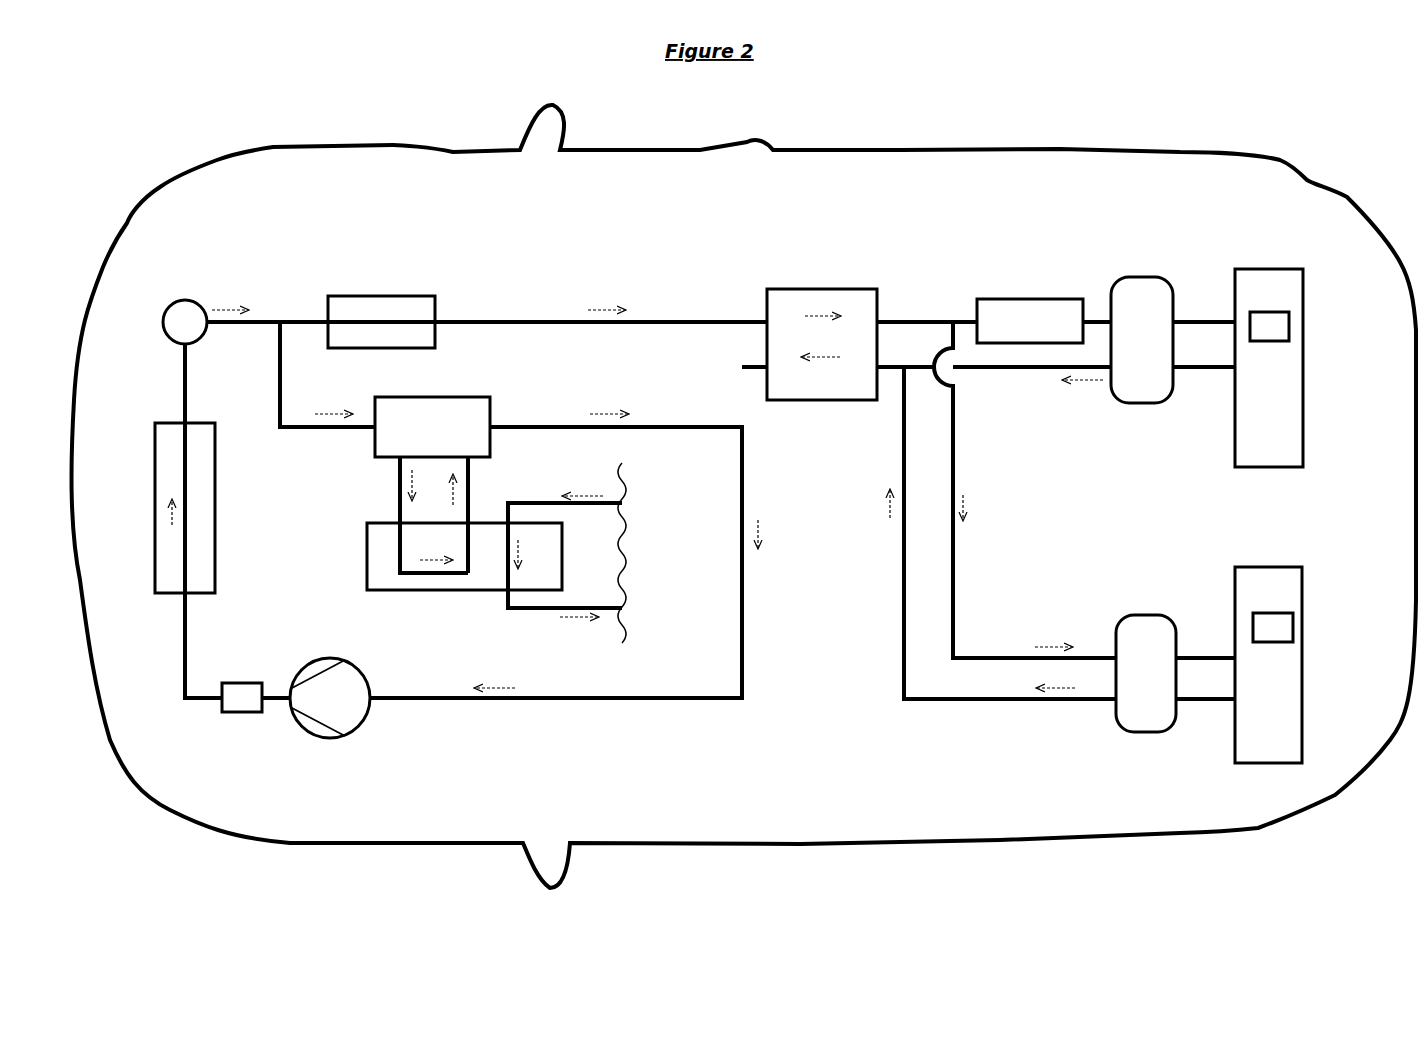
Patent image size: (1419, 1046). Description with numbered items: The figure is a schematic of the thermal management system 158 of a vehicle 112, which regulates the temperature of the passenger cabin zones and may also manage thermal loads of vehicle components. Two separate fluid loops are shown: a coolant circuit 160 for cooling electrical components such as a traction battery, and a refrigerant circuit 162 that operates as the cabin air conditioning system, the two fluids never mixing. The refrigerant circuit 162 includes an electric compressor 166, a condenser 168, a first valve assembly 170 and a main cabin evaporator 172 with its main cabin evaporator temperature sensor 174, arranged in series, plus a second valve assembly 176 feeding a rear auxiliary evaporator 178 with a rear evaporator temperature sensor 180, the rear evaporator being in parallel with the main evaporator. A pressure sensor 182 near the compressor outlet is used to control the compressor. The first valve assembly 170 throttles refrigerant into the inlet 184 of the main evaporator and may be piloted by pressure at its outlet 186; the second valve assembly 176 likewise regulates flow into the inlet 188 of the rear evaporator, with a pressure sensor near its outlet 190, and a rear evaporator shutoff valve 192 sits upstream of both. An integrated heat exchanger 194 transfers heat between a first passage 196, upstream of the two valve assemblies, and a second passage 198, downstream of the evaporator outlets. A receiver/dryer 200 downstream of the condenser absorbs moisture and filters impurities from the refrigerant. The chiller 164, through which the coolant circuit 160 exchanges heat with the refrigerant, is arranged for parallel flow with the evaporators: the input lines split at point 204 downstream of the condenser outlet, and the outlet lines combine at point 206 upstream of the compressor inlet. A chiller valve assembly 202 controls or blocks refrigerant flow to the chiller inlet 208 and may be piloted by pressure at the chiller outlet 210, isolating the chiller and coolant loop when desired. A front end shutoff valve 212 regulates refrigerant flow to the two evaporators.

The vehicle 112 is at (1205, 150).
The thermal management system 158 is at (625, 224).
The coolant circuit 160 is at (512, 622).
The refrigerant circuit 162 is at (583, 740).
The chiller 164 is at (367, 557).
The electric compressor 166 is at (310, 666).
The condenser 168 is at (155, 510).
The first valve assembly 170 is at (1145, 733).
The main cabin evaporator 172 is at (1268, 765).
The main cabin evaporator temperature sensor 174 is at (1273, 628).
The second valve assembly 176 is at (1140, 278).
The rear auxiliary evaporator 178 is at (1270, 268).
The rear evaporator temperature sensor 180 is at (1268, 326).
The pressure sensor 182 is at (240, 713).
The inlet of main cabin evaporator 184 is at (1210, 656).
The outlet of main cabin evaporator 186 is at (1210, 702).
The inlet of rear auxiliary evaporator 188 is at (1200, 320).
The outlet of rear auxiliary evaporator 190 is at (1203, 370).
The rear evaporator shutoff valve 192 is at (1030, 299).
The integrated heat exchanger 194 is at (820, 289).
The first passage 196 is at (752, 321).
The second passage 198 is at (850, 370).
The receiver/dryer 200 is at (180, 300).
The chiller valve assembly 202 is at (435, 397).
The split point 204 is at (278, 318).
The combine point 206 is at (740, 425).
The chiller inlet 208 is at (400, 487).
The chiller outlet 210 is at (468, 490).
The front end shutoff valve 212 is at (405, 295).